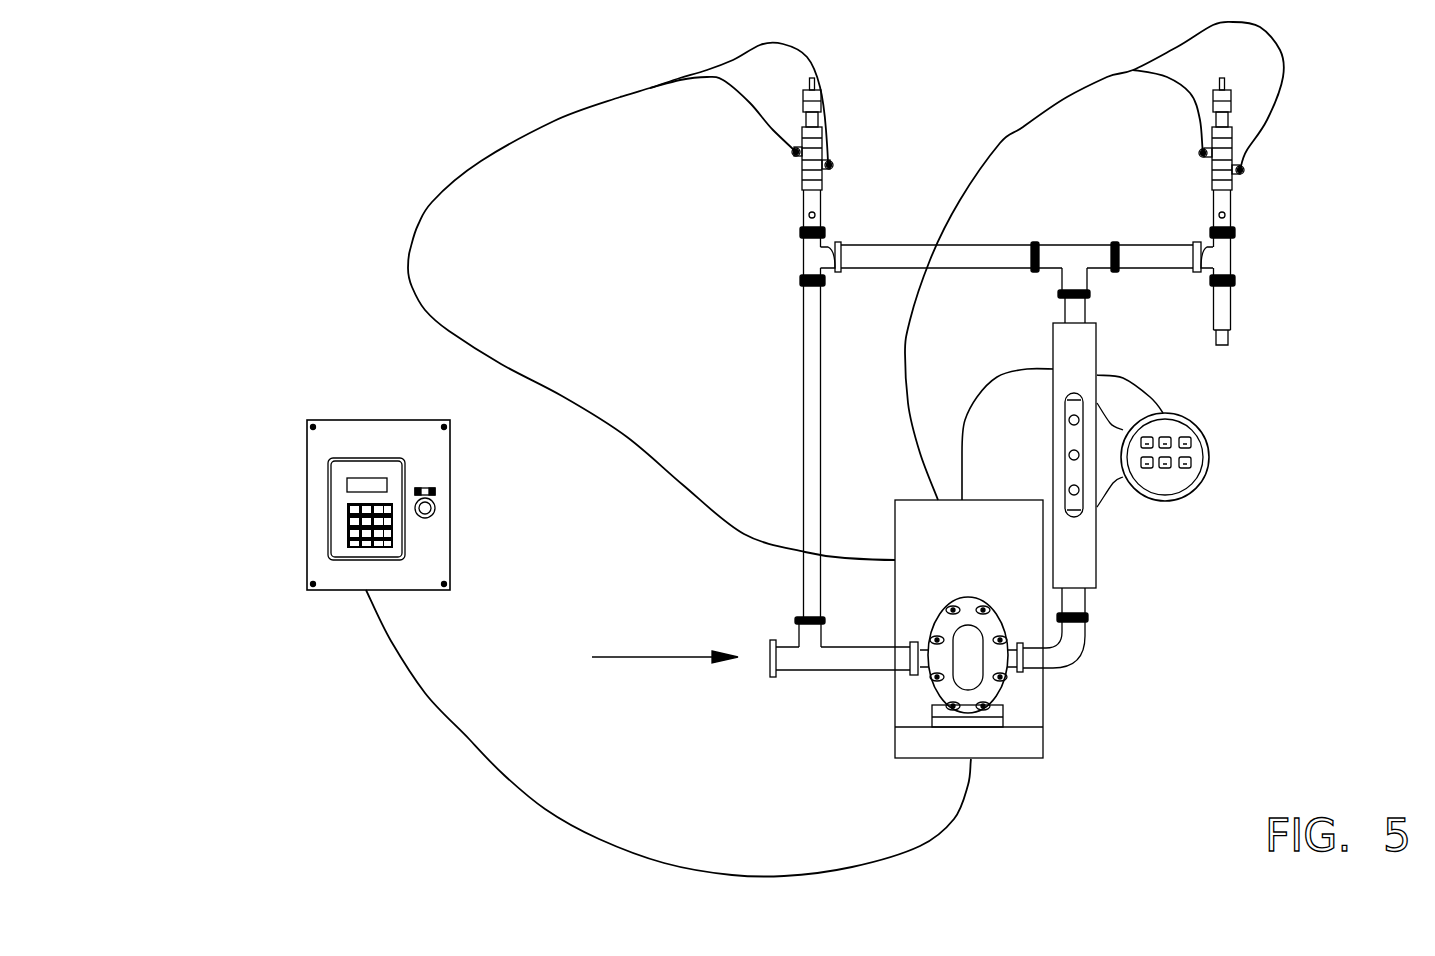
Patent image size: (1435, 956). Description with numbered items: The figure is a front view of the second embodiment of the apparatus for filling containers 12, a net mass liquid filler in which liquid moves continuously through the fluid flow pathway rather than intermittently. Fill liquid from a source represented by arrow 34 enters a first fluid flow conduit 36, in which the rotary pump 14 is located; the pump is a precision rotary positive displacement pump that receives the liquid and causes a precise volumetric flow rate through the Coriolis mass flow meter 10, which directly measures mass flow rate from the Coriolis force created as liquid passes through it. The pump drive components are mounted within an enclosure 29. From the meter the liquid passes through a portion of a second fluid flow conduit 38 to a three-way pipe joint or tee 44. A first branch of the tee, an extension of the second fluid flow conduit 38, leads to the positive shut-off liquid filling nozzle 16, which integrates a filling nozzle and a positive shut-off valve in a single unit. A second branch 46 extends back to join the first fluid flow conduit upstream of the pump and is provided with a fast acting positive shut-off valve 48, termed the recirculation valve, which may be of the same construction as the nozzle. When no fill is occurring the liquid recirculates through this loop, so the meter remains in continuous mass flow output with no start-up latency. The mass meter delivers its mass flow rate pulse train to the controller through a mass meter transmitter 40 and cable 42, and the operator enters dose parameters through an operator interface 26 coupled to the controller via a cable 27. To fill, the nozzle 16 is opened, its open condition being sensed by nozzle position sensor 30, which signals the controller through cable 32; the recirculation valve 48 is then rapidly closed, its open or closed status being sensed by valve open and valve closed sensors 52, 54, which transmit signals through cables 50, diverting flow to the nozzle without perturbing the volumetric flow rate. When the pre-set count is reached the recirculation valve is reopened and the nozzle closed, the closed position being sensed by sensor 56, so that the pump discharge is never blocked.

The Coriolis mass flow meter 10 is at (1060, 352).
The apparatus for filling containers 12 is at (234, 780).
The rotary pump 14 is at (1007, 677).
The positive shut-off liquid filling nozzle 16 is at (1238, 268).
The operator interface 26 is at (360, 438).
The cable 27 is at (503, 776).
The enclosure 29 is at (955, 548).
The nozzle position sensor 30 is at (1203, 153).
The cable 32 is at (1028, 128).
The source of liquid 34 is at (662, 657).
The first fluid flow conduit 36 is at (847, 665).
The second fluid flow conduit 38 is at (1078, 308).
The mass meter transmitter 40 is at (1173, 476).
The cable 42 is at (973, 403).
The three-way pipe joint (tee) 44 is at (1067, 250).
The second branch 46 is at (810, 330).
The fast acting positive shut-off valve (recirculation valve) 48 is at (803, 215).
The cables 50 is at (483, 339).
The valve open sensor 52 is at (796, 152).
The valve closed sensor 54 is at (830, 165).
The sensor 56 is at (1242, 168).